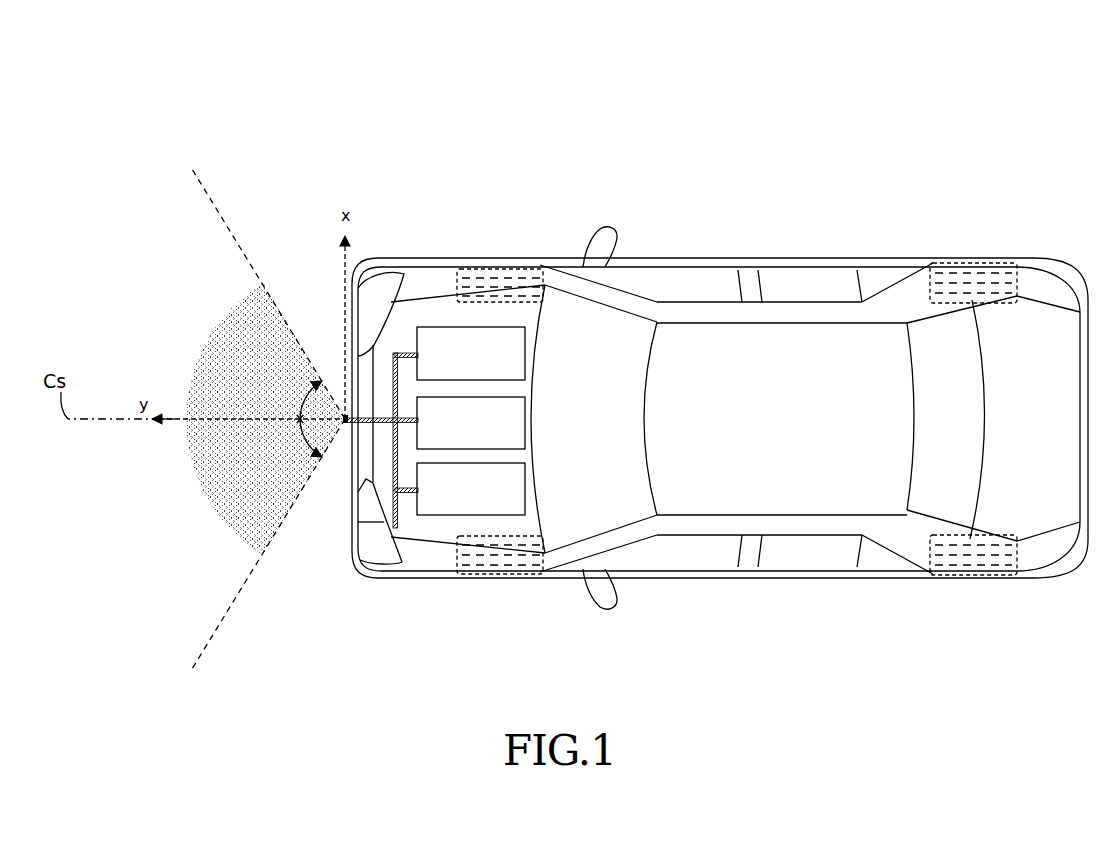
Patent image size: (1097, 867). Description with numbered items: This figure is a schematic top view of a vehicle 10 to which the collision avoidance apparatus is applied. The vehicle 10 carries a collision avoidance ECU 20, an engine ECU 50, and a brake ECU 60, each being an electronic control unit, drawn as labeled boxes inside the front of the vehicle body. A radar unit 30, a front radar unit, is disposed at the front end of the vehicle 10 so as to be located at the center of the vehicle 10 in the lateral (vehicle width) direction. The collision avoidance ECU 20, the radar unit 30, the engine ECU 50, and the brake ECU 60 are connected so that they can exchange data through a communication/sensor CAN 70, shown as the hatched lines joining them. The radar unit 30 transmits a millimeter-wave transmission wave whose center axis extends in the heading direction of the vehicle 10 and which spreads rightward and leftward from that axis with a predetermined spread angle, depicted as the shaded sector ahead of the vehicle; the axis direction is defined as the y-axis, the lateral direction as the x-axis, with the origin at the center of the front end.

The vehicle 10 is at (215, 81).
The collision avoidance ECU 20 is at (525, 364).
The radar unit 30 is at (345, 430).
The engine ECU 50 is at (527, 426).
The brake ECU 60 is at (527, 487).
The communication/sensor CAN 70 is at (358, 522).